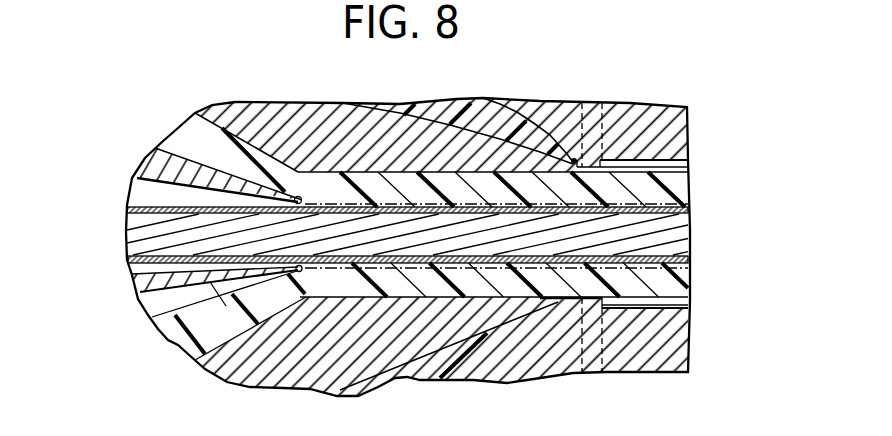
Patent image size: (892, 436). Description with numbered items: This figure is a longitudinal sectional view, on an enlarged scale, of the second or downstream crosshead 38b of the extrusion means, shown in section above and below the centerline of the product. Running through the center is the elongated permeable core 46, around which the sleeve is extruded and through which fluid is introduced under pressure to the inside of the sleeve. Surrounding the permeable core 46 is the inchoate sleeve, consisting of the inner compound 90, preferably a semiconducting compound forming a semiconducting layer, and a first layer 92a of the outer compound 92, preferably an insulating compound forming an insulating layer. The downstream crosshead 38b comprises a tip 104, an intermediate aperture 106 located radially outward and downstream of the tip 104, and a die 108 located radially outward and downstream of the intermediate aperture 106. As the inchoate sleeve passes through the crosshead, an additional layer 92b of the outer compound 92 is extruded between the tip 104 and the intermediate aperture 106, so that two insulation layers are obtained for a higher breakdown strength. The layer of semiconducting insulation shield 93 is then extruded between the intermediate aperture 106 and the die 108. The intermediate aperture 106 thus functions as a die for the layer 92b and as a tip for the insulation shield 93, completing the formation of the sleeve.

The downstream crosshead 38b is at (415, 92).
The tip 104 is at (297, 196).
The inner compound 90 is at (668, 200).
The permeable core 46 is at (700, 234).
The outer compound 92 is at (711, 261).
The layer of outer compound 92a is at (133, 274).
The additional layer of outer compound 92b is at (231, 322).
The semiconducting insulation shield 93 is at (684, 308).
The intermediate aperture 106 is at (554, 303).
The die 108 is at (591, 347).